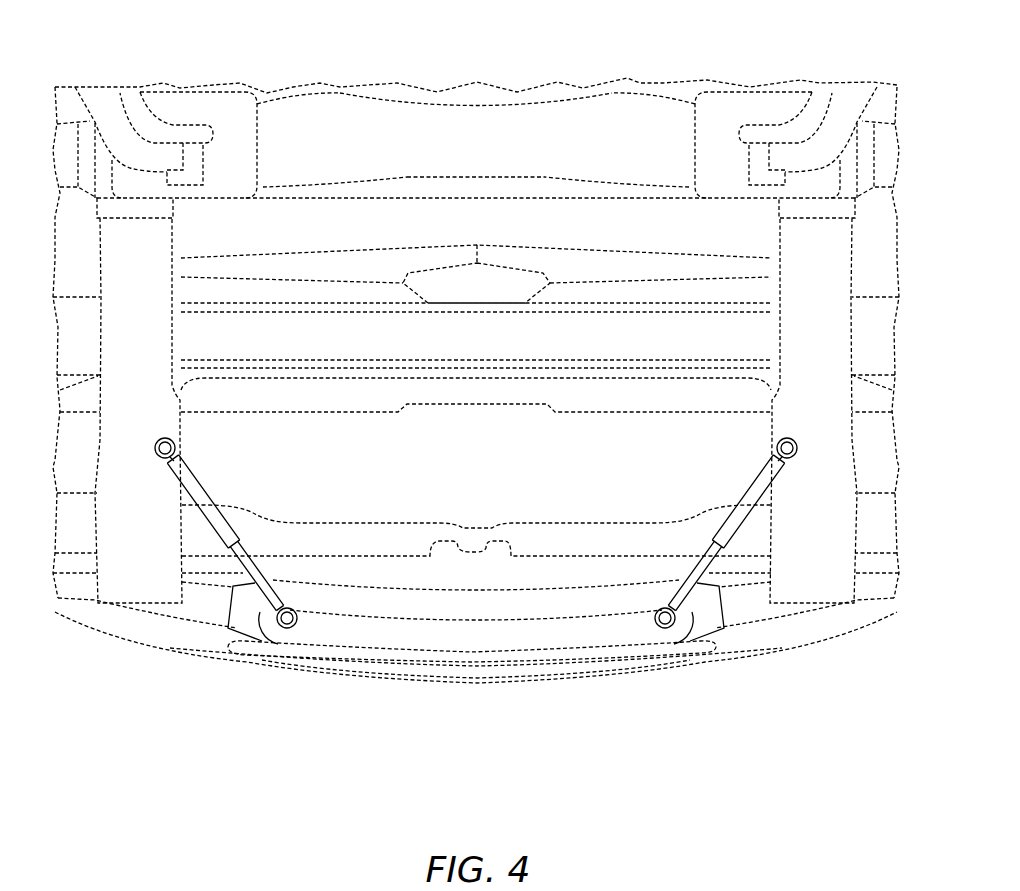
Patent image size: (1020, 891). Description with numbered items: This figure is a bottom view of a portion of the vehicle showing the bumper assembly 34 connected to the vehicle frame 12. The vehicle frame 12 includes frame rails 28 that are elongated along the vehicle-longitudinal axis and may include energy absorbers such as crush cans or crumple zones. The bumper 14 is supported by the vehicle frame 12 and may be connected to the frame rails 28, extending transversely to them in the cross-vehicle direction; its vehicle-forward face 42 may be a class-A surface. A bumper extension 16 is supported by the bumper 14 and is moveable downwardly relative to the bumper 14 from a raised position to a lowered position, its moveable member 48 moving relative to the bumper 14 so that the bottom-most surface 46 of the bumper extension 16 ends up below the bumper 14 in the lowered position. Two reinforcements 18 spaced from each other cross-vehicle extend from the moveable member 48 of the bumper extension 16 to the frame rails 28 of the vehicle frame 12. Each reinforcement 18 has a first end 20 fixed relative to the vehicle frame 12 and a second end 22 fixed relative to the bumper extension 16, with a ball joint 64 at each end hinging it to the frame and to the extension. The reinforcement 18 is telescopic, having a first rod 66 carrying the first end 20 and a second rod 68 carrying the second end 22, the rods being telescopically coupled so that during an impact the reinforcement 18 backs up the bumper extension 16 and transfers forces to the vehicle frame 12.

The vehicle frame 12 is at (184, 336).
The bumper 14 is at (812, 632).
The bumper extension 16 is at (397, 655).
The reinforcement 18 is at (210, 522).
The first end 20 is at (479, 557).
The second end 22 is at (289, 601).
The frame rails 28 is at (126, 347).
The bumper assembly 34 is at (178, 668).
The vehicle-forward face 42 is at (120, 638).
The bottom-most surface 46 is at (563, 640).
The moveable member 48 is at (465, 640).
The ball joint 64 is at (159, 439).
The first rod 66 is at (188, 473).
The second rod 68 is at (256, 568).